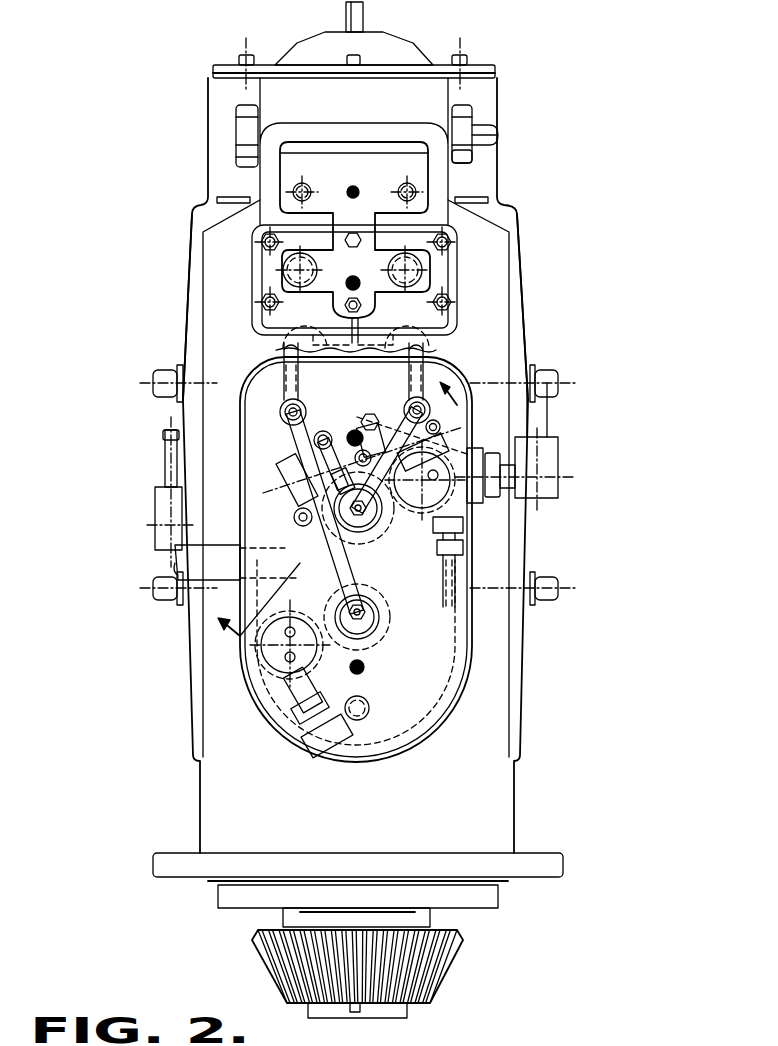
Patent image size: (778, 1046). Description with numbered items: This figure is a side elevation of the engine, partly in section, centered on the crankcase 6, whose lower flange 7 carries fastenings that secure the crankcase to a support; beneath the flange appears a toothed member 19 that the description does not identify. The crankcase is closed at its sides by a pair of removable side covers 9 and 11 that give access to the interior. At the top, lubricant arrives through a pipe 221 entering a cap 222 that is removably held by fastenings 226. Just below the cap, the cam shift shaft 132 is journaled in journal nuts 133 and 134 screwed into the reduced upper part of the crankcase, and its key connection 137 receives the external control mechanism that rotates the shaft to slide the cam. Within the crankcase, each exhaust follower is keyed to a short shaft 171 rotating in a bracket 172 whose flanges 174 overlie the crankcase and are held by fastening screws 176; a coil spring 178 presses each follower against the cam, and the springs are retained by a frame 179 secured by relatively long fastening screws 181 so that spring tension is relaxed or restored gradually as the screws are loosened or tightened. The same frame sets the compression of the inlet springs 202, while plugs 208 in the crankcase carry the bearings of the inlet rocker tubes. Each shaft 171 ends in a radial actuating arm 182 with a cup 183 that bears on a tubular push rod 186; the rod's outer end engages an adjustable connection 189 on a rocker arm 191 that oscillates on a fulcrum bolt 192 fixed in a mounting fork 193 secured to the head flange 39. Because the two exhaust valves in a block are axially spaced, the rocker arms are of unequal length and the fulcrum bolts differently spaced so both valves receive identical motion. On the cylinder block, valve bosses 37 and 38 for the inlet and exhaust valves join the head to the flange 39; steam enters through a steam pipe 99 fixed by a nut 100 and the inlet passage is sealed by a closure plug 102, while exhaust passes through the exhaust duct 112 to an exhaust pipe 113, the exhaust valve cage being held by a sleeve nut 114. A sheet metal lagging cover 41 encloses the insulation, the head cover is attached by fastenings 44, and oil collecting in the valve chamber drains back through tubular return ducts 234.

The crankcase 6 is at (508, 818).
The lower flange 7 is at (176, 887).
The side cover 9 is at (183, 310).
The side cover 11 is at (521, 290).
The bevel gear 19 is at (442, 973).
The valve boss 37 is at (414, 508).
The valve boss 38 is at (378, 586).
The head flange 39 is at (440, 714).
The lagging cover 41 is at (418, 745).
The removable fastenings 44 is at (349, 430).
The steam pipe 99 is at (505, 495).
The nut 100 is at (497, 454).
The closure plug 102 is at (268, 670).
The exhaust duct 112 is at (298, 522).
The exhaust pipe 113 is at (213, 546).
The sleeve nut 114 is at (364, 538).
The shift shaft 132 is at (490, 118).
The journal nut 133 is at (240, 143).
The journal nut 134 is at (470, 162).
The key connection 137 is at (497, 135).
The shaft 171 is at (358, 343).
The bracket 172 is at (453, 292).
The flanges 174 is at (451, 244).
The fastening screws 176 is at (265, 297).
The coil spring 178 is at (403, 190).
The frame 179 is at (362, 242).
The fastening screws 181 is at (349, 282).
The radial actuating arm 182 is at (300, 362).
The cup 183 is at (284, 388).
The tubular push rod 186 is at (280, 412).
The adjustable connection 189 is at (287, 420).
The rocker arm 191 is at (395, 423).
The fulcrum bolt 192 is at (280, 476).
The mounting fork 193 is at (322, 436).
The spring 202 is at (304, 260).
The plugs 208 is at (220, 199).
The pipe 221 is at (364, 17).
The cap 222 is at (412, 60).
The fastenings 226 is at (242, 57).
The tubular return ducts 234 is at (370, 704).